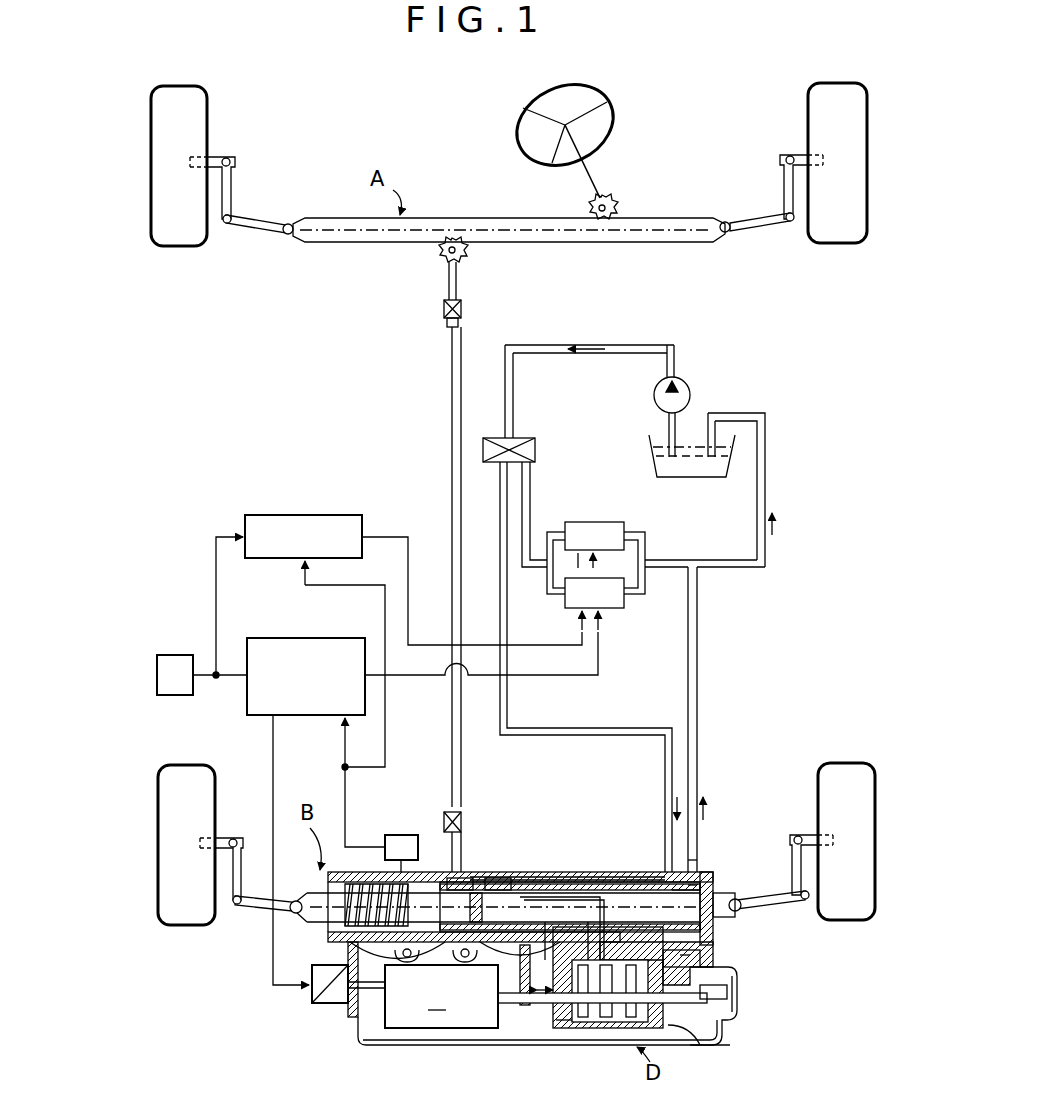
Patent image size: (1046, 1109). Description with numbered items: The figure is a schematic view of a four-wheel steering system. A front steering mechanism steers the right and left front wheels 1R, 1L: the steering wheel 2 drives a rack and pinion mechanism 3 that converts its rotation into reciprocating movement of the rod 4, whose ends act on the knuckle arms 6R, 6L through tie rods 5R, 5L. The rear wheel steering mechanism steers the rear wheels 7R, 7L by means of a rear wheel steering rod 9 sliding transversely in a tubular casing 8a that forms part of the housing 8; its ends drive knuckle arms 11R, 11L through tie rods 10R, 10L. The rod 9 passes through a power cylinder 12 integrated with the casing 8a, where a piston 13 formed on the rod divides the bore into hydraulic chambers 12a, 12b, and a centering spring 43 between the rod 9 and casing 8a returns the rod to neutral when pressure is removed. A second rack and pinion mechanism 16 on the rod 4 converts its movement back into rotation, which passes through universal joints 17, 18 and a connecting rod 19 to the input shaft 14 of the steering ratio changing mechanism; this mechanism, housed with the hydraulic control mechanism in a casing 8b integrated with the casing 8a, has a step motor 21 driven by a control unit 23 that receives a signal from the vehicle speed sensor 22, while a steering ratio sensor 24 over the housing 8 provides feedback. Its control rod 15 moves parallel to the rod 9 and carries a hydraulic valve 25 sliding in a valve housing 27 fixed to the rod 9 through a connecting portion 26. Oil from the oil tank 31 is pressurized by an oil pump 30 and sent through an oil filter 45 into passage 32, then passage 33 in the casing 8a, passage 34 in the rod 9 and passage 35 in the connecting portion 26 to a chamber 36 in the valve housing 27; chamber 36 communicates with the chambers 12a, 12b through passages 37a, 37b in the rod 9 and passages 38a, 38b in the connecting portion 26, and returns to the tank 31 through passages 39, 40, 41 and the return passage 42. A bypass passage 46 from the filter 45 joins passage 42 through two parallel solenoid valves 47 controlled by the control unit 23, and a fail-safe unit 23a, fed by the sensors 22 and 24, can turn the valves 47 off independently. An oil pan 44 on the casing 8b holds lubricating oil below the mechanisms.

The left front wheel 1L is at (198, 112).
The right front wheel 1R is at (820, 100).
The steering wheel 2 is at (518, 132).
The rack and pinion mechanism 3 is at (622, 205).
The rod 4 is at (590, 243).
The left tie rod 5L is at (268, 238).
The right tie rod 5R is at (752, 236).
The left knuckle arm 6L is at (233, 189).
The right knuckle arm 6R is at (784, 183).
The left rear wheel 7L is at (232, 757).
The right rear wheel 7R is at (822, 775).
The housing 8 is at (520, 884).
The tubular casing 8a is at (598, 872).
The casing 8b is at (737, 996).
The rear wheel steering rod 9 is at (310, 893).
The left tie rod 10L is at (254, 909).
The right tie rod 10R is at (790, 901).
The left knuckle arm 11L is at (243, 862).
The right knuckle arm 11R is at (790, 853).
The power cylinder 12 is at (488, 860).
The hydraulic chamber 12a is at (437, 872).
The hydraulic chamber 12b is at (497, 882).
The piston 13 is at (476, 873).
The input shaft 14 is at (348, 950).
The control rod 15 is at (510, 1005).
The second rack and pinion mechanism 16 is at (437, 256).
The universal joint 17 is at (463, 307).
The universal joint 18 is at (464, 815).
The connecting rod 19 is at (451, 471).
The step motor 21 is at (312, 1000).
The vehicle speed sensor 22 is at (172, 655).
The control unit 23 is at (293, 638).
The fail-safe unit 23a is at (303, 515).
The steering ratio sensor 24 is at (396, 835).
The hydraulic valve 25 is at (583, 1017).
The connecting portion 26 is at (700, 935).
The valve housing 27 is at (712, 1030).
The oil pump 30 is at (686, 382).
The oil tank 31 is at (706, 479).
The hydraulic passage 32 is at (628, 726).
The hydraulic passage 33 is at (697, 875).
The hydraulic passage 34 is at (689, 862).
The hydraulic passage 35 is at (591, 977).
The hydraulic chamber 36 is at (608, 1017).
The hydraulic passage 37a is at (532, 870).
The hydraulic passage 37b is at (542, 895).
The hydraulic passage 38a is at (560, 1010).
The hydraulic passage 38b is at (690, 955).
The hydraulic passage 39 is at (727, 978).
The hydraulic passage 40 is at (716, 893).
The hydraulic passage 41 is at (700, 888).
The hydraulic passage 42 is at (767, 468).
The centering spring 43 is at (360, 882).
The oil pan 44 is at (722, 1044).
The oil filter 45 is at (533, 438).
The bypass hydraulic passage 46 is at (531, 500).
The solenoid valve 47 is at (614, 521).